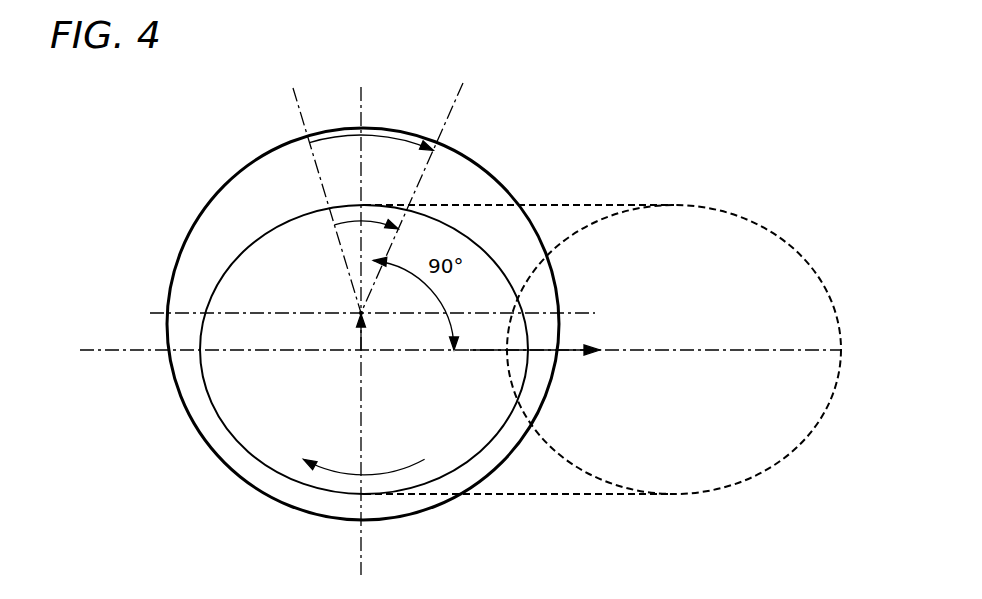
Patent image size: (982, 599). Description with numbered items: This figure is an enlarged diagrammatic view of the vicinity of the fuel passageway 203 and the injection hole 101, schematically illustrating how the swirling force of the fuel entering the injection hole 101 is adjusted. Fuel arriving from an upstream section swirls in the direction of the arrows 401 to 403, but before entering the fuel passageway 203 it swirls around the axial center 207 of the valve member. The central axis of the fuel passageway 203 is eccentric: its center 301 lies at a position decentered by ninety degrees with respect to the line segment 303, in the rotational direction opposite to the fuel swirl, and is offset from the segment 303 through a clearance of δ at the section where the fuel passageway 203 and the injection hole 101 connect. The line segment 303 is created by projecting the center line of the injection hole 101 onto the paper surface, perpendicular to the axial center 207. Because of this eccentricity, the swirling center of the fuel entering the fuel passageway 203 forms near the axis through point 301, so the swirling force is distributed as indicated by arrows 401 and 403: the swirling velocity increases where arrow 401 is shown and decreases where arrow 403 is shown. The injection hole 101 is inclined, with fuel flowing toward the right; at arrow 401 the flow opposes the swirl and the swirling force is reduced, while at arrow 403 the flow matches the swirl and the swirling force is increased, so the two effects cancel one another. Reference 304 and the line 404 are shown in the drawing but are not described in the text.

The injection hole 101 is at (468, 422).
The fuel passageway 203 is at (260, 203).
The axial center of the valve member 207 is at (363, 353).
The position of the central axis of the fuel passageway 301 is at (361, 313).
The line segment 303 is at (650, 350).
The shift direction 304 is at (468, 350).
The arrow 401 is at (385, 473).
The arrow 402 is at (392, 133).
The arrow 403 is at (377, 224).
The reference angle line 404 is at (262, 155).